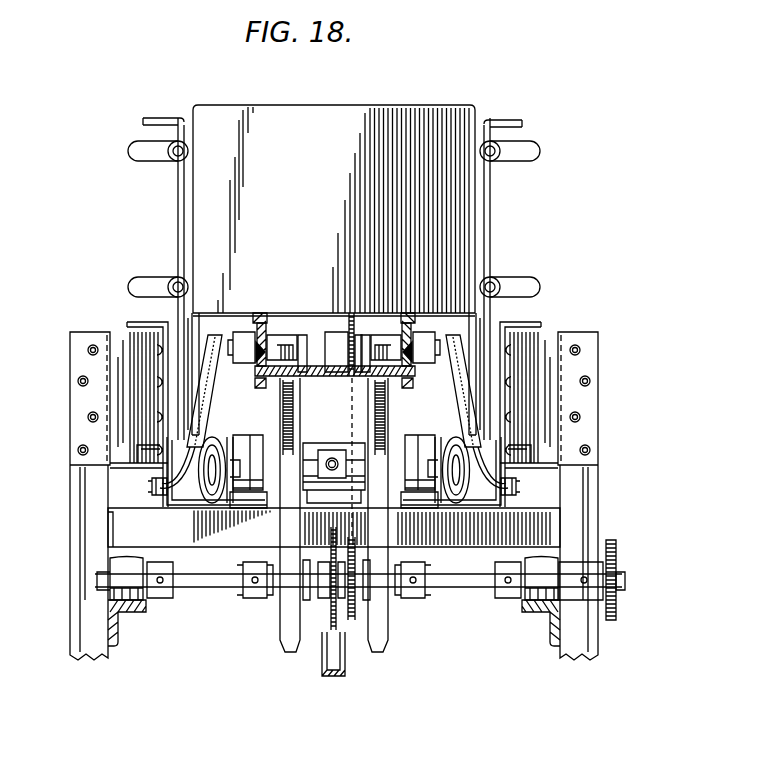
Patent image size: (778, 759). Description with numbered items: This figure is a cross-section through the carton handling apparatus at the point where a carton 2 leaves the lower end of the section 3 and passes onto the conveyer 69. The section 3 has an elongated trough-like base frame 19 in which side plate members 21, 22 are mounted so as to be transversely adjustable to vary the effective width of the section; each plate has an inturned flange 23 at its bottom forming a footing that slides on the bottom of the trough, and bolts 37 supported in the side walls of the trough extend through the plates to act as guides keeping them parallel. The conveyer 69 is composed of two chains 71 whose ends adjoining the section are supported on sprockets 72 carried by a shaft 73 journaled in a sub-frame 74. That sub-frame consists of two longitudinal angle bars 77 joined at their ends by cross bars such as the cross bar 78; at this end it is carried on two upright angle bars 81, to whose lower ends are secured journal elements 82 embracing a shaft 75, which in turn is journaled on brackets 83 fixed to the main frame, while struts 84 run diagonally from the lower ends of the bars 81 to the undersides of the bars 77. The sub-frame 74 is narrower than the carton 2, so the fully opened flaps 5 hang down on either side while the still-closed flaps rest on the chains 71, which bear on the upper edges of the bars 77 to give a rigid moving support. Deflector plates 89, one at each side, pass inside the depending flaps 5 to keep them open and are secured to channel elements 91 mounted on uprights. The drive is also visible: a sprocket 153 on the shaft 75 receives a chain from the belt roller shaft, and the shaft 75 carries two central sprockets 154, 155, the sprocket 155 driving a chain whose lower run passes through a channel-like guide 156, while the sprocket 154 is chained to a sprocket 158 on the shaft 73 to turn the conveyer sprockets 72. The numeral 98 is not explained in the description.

The carton 2 is at (330, 118).
The section 3 is at (491, 212).
The flap 5 is at (193, 325).
The trough-like base frame 19 is at (182, 512).
The side plate member 21 is at (498, 120).
The side plate member 22 is at (176, 118).
The inturned flange 23 is at (217, 503).
The bolt 37 is at (158, 489).
The conveyer 69 is at (268, 322).
The chain 71 is at (253, 321).
The sprocket 72 is at (247, 348).
The shaft 73 is at (310, 352).
The sub-frame 74 is at (306, 376).
The shaft 75 is at (217, 586).
The angle bar 77 is at (256, 360).
The cross bar 78 is at (361, 378).
The upright angle bar 81 is at (275, 533).
The journal element 82 is at (268, 600).
The bracket 83 is at (129, 612).
The strut 84 is at (283, 422).
The deflector plate 89 is at (215, 368).
The channel element 91 is at (150, 486).
The roller 98 is at (140, 150).
The sprocket 153 is at (617, 612).
The sprocket 154 is at (353, 622).
The sprocket 155 is at (330, 614).
The channel-like guide 156 is at (333, 678).
The sprocket 158 is at (352, 318).